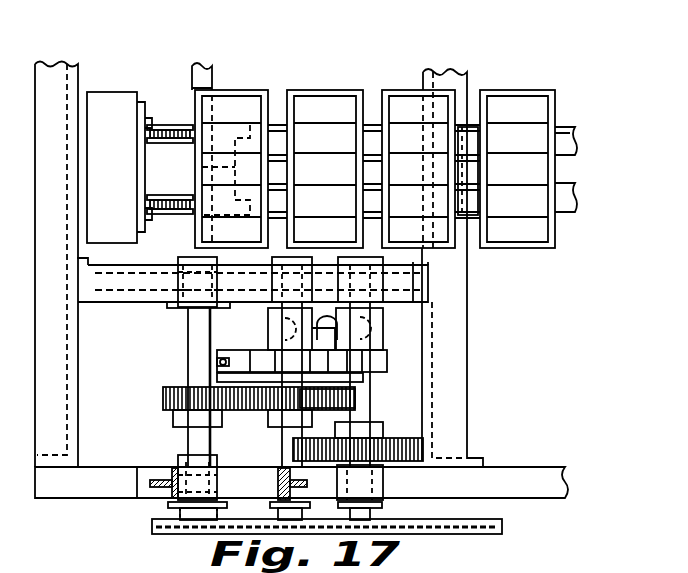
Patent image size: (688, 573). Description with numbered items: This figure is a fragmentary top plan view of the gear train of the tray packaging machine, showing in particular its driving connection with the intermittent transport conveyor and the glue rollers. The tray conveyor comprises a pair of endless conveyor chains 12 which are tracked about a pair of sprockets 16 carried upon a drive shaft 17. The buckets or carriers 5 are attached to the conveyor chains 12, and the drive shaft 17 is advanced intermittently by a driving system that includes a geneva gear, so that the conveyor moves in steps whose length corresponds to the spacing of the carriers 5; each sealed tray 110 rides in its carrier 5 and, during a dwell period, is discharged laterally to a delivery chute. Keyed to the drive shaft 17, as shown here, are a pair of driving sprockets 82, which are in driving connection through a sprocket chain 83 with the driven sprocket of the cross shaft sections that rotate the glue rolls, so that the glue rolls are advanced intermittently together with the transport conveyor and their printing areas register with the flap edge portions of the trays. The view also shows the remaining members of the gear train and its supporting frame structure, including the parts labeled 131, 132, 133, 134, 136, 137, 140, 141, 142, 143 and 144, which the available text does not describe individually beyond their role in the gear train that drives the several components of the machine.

The bucket or carrier 5 is at (103, 100).
The endless conveyor chain 12 is at (158, 125).
The sprocket 16 is at (178, 125).
The drive shaft 17 is at (200, 338).
The driving sprocket 82 is at (177, 515).
The sprocket chain 83 is at (450, 533).
The sealed tray 110 is at (328, 105).
The gear 131 is at (423, 450).
The shaft 132 is at (360, 413).
The cross beam 133 is at (403, 278).
The bearing housing 134 is at (337, 340).
The housing block 136 is at (377, 358).
The shaft 137 is at (287, 447).
The plate 140 is at (225, 363).
The bearing housing 141 is at (385, 327).
The gear 142 is at (355, 393).
The gear 143 is at (163, 392).
The hidden linkage 144 is at (193, 162).